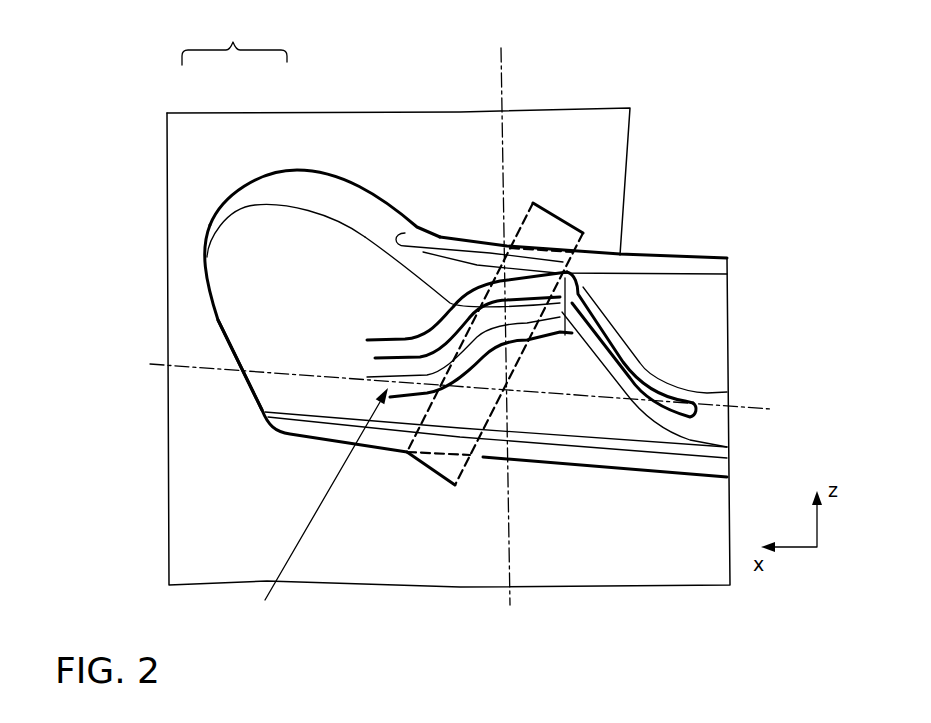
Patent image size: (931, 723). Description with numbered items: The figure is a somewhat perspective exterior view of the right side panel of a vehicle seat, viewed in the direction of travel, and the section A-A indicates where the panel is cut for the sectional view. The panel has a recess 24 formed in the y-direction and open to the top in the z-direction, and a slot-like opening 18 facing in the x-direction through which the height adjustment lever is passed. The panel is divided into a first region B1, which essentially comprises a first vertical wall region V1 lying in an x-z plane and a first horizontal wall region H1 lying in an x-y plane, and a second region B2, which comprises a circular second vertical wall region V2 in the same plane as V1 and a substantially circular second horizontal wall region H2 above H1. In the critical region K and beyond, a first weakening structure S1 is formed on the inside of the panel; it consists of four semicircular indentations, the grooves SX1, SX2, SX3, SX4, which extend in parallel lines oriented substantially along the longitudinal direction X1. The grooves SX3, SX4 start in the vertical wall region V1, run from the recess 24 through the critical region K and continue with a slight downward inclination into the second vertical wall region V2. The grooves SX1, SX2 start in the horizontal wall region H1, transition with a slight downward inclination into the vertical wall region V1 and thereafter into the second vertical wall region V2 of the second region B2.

The second region B2 is at (234, 36).
The second vertical wall region V2 is at (252, 228).
The second horizontal wall region H2 is at (292, 188).
The first horizontal wall region H1 is at (450, 282).
The first region B1 is at (484, 275).
The section A-A is at (495, 311).
The first indentation (groove) SX1 is at (529, 279).
The second indentation (groove) SX2 is at (540, 297).
The third indentation (groove) SX3 is at (529, 319).
The fourth indentation (groove) SX4 is at (556, 335).
The recess 24 is at (700, 315).
The longitudinal direction X1 is at (478, 395).
The first weakening structure S1 is at (312, 513).
The critical region K is at (483, 432).
The first vertical wall region V1 is at (532, 380).
The slot-like opening 18 is at (627, 384).